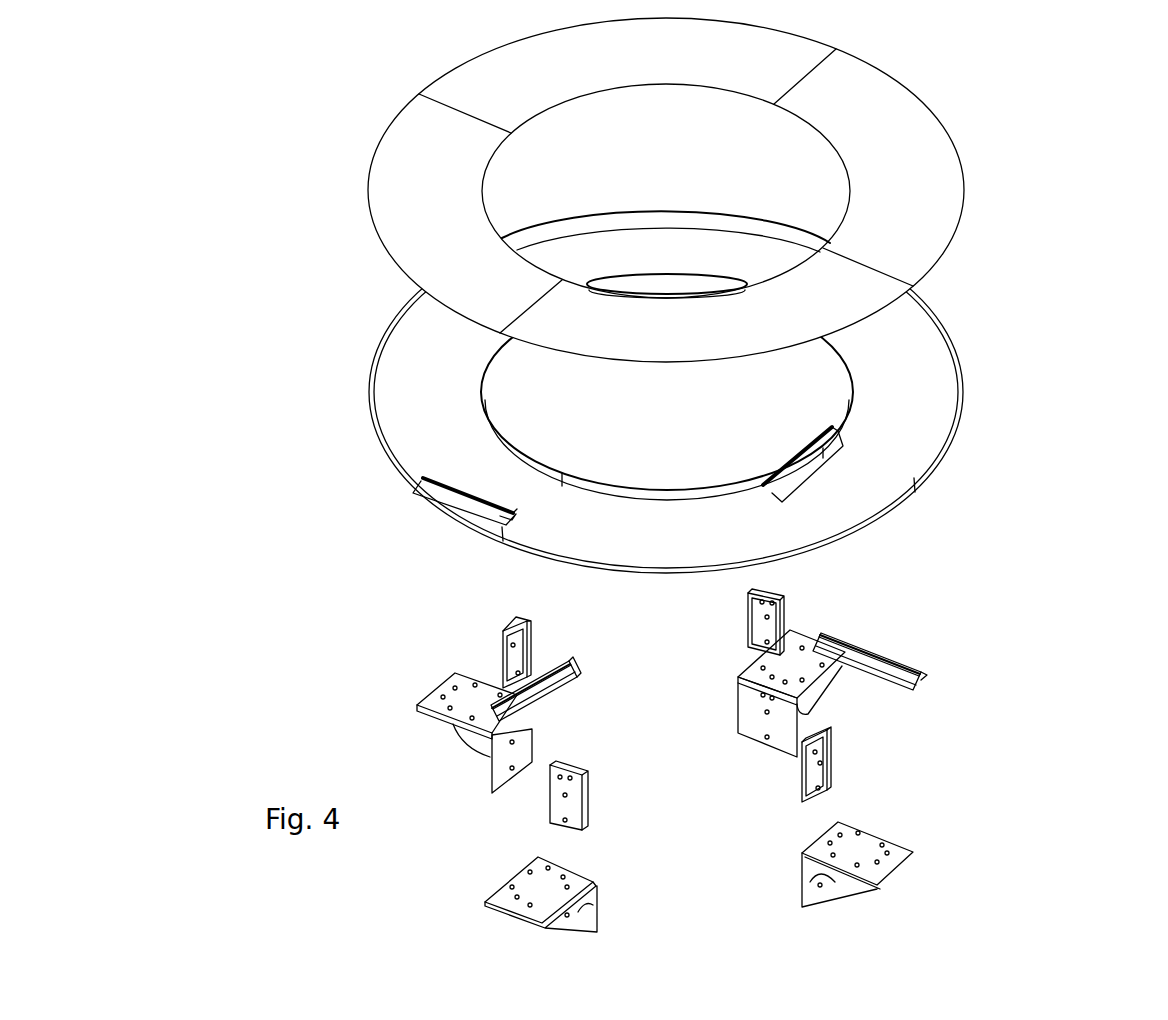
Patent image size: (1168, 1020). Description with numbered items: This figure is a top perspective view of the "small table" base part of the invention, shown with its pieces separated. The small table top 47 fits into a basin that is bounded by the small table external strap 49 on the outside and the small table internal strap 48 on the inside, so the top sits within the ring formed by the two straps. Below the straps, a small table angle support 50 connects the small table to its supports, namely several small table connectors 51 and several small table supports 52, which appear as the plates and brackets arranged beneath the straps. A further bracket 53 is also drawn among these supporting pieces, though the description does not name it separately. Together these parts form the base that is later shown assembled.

The small table top 47 is at (966, 190).
The small table internal strap 48 is at (664, 272).
The small table external strap 49 is at (418, 288).
The small table angle support 50 is at (820, 475).
The small table connector 51 is at (786, 620).
The small table support 52 is at (920, 676).
The angle bracket 53 is at (798, 907).